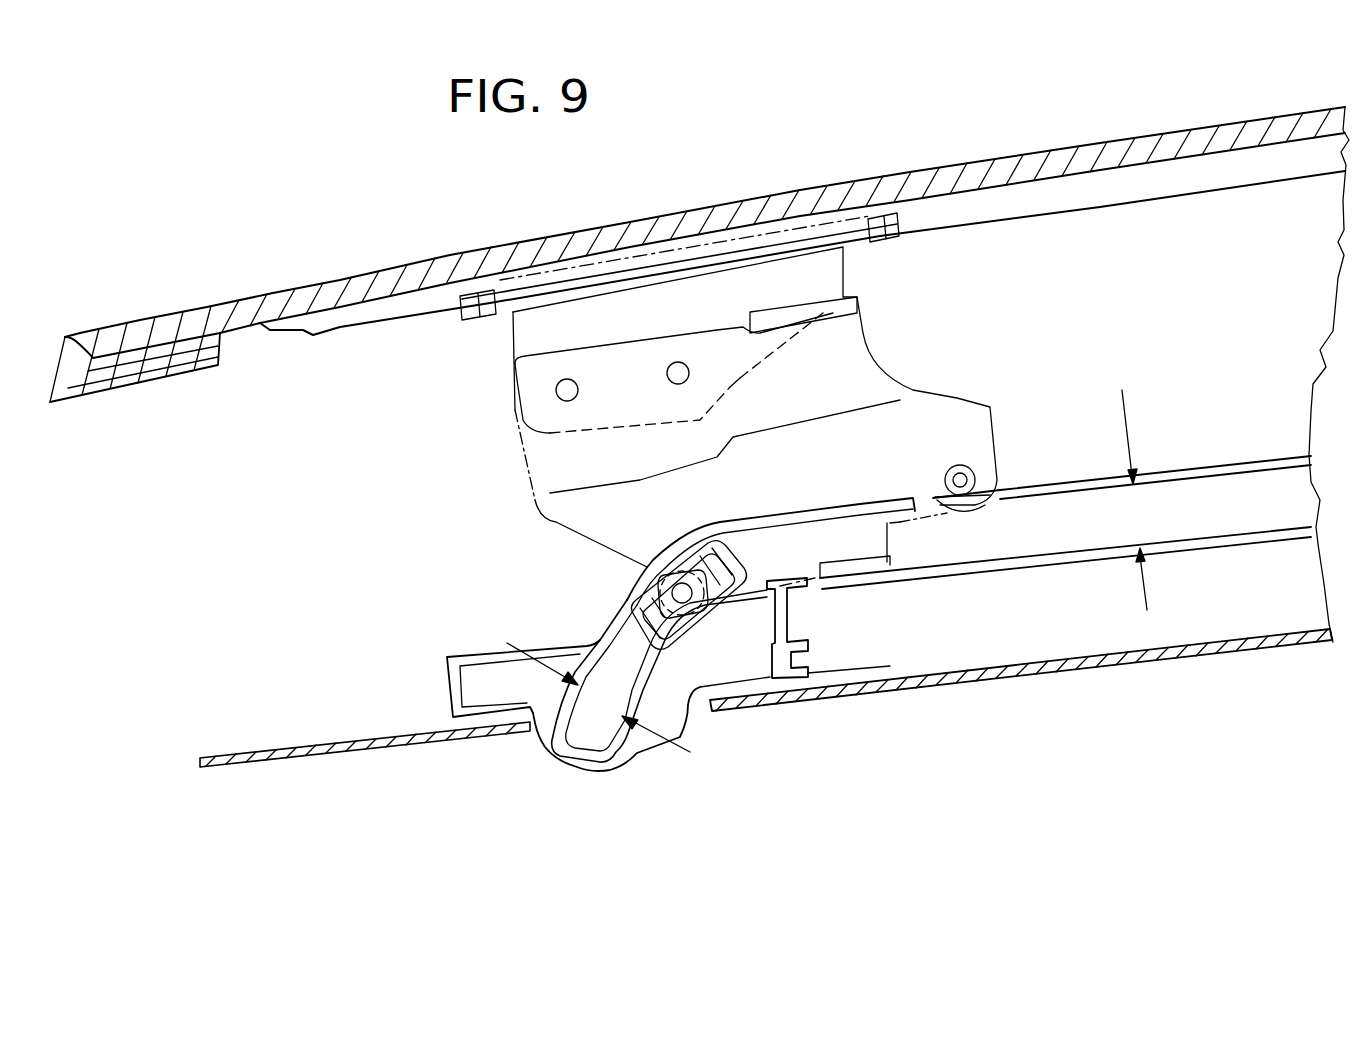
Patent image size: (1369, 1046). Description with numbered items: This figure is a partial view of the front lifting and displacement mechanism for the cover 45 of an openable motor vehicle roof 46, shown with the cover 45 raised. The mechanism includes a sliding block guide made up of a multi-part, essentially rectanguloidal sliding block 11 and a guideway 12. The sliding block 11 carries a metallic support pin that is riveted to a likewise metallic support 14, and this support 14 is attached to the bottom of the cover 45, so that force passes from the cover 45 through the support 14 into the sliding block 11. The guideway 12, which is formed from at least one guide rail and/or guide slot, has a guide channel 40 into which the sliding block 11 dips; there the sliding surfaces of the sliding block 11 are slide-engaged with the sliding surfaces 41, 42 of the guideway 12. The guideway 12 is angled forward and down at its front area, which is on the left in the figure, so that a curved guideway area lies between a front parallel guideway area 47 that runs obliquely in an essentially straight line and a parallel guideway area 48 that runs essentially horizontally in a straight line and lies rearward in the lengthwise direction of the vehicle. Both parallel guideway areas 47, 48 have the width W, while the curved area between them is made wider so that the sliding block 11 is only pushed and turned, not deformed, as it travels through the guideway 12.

The sliding block 11 is at (640, 615).
The guideway 12 is at (1062, 484).
The support 14 is at (848, 378).
The guide channel 40 is at (958, 540).
The sliding surface of the guideway 41 is at (1250, 484).
The sliding surface of the guideway 42 is at (1210, 523).
The cover 45 is at (910, 180).
The openable motor vehicle roof 46 is at (283, 202).
The front parallel guideway area 47 is at (590, 735).
The parallel guideway area 48 is at (1272, 497).